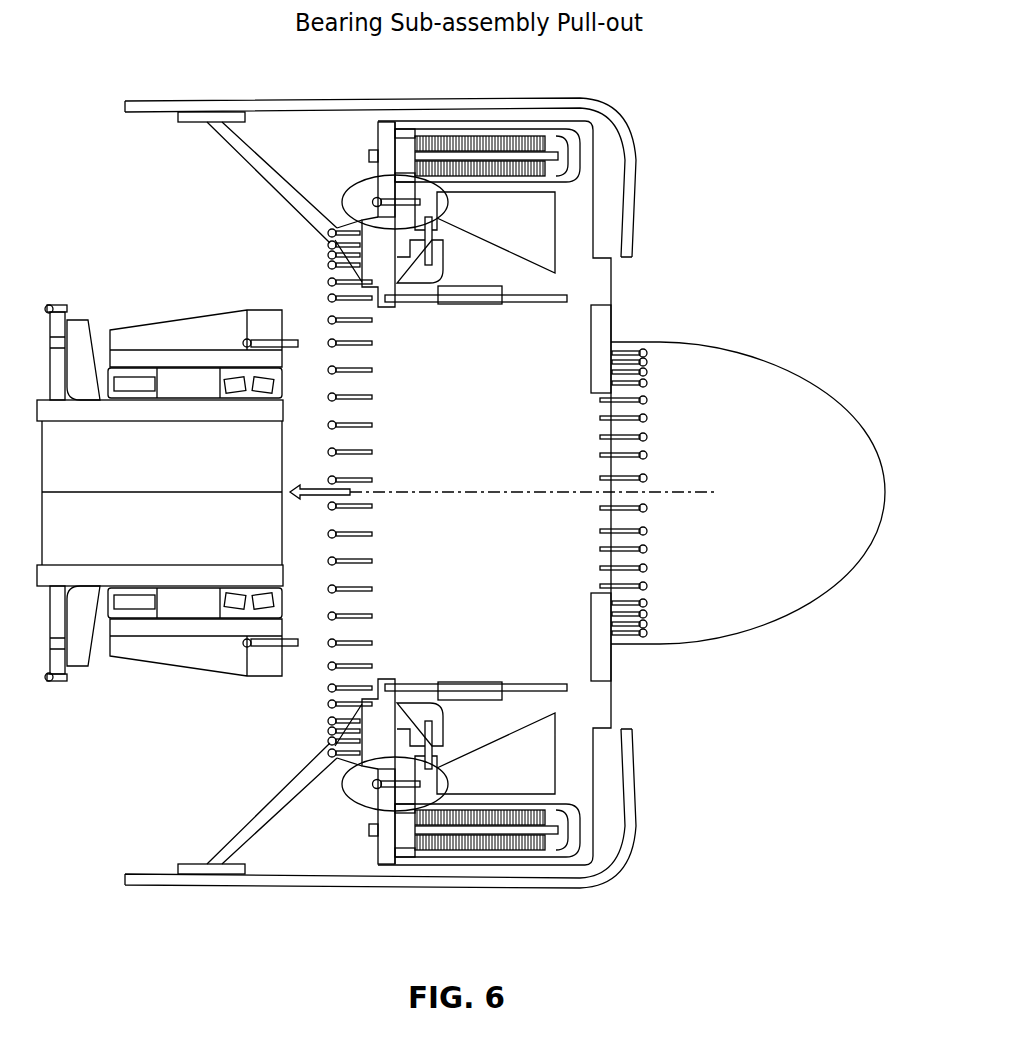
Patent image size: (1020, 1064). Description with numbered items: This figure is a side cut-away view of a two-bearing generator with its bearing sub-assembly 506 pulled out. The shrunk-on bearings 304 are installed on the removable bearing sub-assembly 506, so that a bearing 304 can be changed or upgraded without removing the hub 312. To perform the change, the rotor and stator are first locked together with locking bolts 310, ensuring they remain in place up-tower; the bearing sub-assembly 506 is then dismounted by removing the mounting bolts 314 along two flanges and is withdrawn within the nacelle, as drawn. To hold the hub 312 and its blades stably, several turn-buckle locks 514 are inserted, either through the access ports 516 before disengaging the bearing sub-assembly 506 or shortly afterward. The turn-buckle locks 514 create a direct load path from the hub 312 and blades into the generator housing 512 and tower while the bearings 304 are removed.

The bearings 304 is at (133, 366).
The locking bolts 310 is at (357, 789).
The hub 312 is at (810, 367).
The mounting bolts 314 is at (297, 338).
The bearing sub-assembly 506 is at (38, 564).
The generator housing 512 is at (635, 152).
The turn-buckle locks 514 is at (480, 302).
The access ports 516 is at (70, 341).